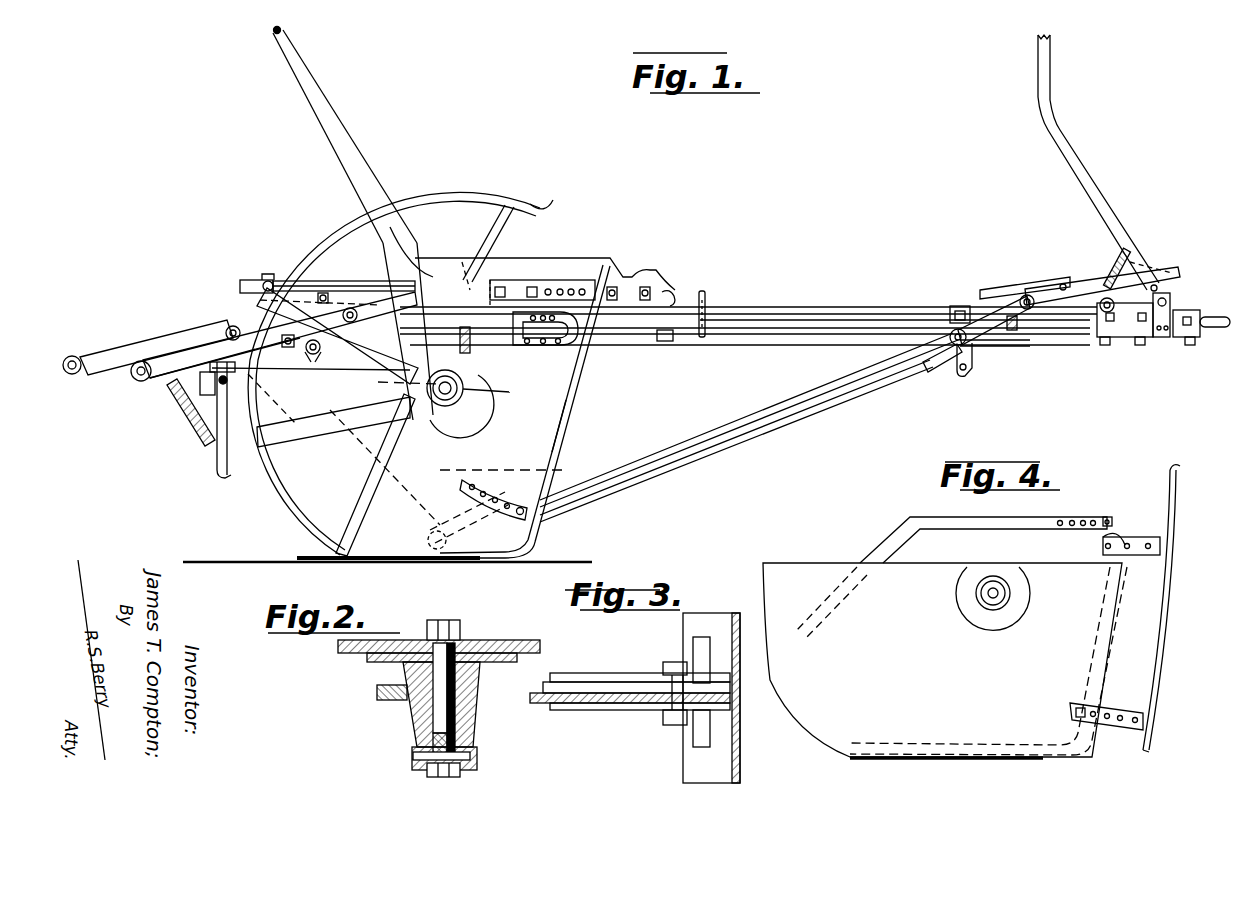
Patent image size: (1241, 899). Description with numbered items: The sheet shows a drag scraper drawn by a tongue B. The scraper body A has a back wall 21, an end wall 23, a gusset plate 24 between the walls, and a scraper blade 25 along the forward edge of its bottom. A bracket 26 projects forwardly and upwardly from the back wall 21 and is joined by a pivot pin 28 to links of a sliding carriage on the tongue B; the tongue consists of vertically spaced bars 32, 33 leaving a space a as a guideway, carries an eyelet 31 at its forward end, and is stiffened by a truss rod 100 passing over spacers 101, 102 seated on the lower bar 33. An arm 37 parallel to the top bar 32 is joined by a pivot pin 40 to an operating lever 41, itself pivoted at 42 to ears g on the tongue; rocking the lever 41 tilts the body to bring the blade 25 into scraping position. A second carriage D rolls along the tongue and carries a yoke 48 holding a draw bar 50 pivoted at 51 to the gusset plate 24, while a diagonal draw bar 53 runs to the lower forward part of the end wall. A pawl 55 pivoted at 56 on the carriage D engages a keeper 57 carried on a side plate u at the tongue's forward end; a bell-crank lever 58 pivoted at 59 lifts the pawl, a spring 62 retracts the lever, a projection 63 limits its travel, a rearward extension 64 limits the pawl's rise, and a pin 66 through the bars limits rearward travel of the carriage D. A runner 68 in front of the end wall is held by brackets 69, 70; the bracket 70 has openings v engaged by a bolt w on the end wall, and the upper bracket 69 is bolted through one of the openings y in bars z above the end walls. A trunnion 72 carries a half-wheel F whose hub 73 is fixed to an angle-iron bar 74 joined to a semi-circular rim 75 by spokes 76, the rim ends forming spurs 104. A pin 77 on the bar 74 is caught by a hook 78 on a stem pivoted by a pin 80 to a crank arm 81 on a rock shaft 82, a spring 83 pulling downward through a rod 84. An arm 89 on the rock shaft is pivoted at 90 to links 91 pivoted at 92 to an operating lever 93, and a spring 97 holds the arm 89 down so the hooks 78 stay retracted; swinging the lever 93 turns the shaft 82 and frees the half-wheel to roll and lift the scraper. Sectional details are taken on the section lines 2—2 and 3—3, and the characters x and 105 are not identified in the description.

In FIG. 1, the section line 2— 2 is at (386, 370).
In FIG. 1, the section line 3— 3 is at (455, 460).
In FIG. 1, the back wall 21 is at (215, 485).
In FIG. 1, the end wall 23 is at (537, 420).
In FIG. 2, the end wall 23 is at (527, 640).
In FIG. 3, the end wall 23 is at (594, 704).
In FIG. 1, the gusset plate 24 is at (311, 396).
In FIG. 1, the scraper blade 25 is at (478, 560).
In FIG. 1, the bracket 26 is at (215, 345).
In FIG. 1, the pivot pin 28 is at (350, 308).
In FIG. 1, the eyelet 31 is at (1222, 330).
In FIG. 1, the top bar of tongue 32 is at (760, 307).
In FIG. 1, the lower bar of tongue 33 is at (763, 340).
In FIG. 1, the arm 37 is at (560, 280).
In FIG. 1, the pivot pin 40 is at (615, 285).
In FIG. 1, the operating lever 41 is at (373, 165).
In FIG. 1, the pivot of operating lever 42 is at (650, 285).
In FIG. 1, the yoke 48 is at (978, 357).
In FIG. 1, the draw bar 50 is at (808, 427).
In FIG. 1, the pivot of draw bar 51 is at (430, 535).
In FIG. 1, the draw bar 53 is at (748, 417).
In FIG. 1, the pawl 55 is at (1080, 283).
In FIG. 1, the pawl pivot 56 is at (1028, 295).
In FIG. 1, the keeper 57 is at (1106, 298).
In FIG. 1, the bell-crank lever 58 is at (1057, 135).
In FIG. 1, the pivot of bell-crank lever 59 is at (1170, 298).
In FIG. 1, the spring 62 is at (1120, 258).
In FIG. 1, the projection 63 is at (1195, 305).
In FIG. 1, the rearward extension 64 is at (992, 288).
In FIG. 1, the pin 66 is at (707, 292).
In FIG. 1, the runner 68 is at (577, 400).
In FIG. 3, the runner 68 is at (690, 630).
In FIG. 4, the runner 68 is at (1178, 488).
In FIG. 1, the upper bracket 69 is at (556, 349).
In FIG. 4, the upper bracket 69 is at (1142, 536).
In FIG. 1, the bracket 70 is at (498, 501).
In FIG. 3, the bracket 70 is at (634, 712).
In FIG. 4, the bracket 70 is at (1118, 706).
In FIG. 1, the trunnion 72 is at (465, 398).
In FIG. 2, the trunnion 72 is at (465, 705).
In FIG. 4, the trunnion 72 is at (978, 593).
In FIG. 2, the hub 73 is at (470, 730).
In FIG. 1, the angle-iron bar 74 is at (355, 495).
In FIG. 2, the angle-iron bar 74 is at (395, 697).
In FIG. 1, the semi-circular rim 75 is at (283, 514).
In FIG. 1, the spokes 76 is at (315, 445).
In FIG. 1, the pin 77 is at (461, 252).
In FIG. 1, the hook 78 is at (492, 262).
In FIG. 1, the pin 80 is at (250, 280).
In FIG. 1, the crank arm 81 is at (268, 278).
In FIG. 1, the rock shaft 82 is at (315, 355).
In FIG. 1, the spring 83 is at (472, 343).
In FIG. 1, the rod 84 is at (328, 294).
In FIG. 1, the arm 89 is at (203, 381).
In FIG. 1, the pivot 90 is at (133, 377).
In FIG. 1, the links 91 is at (173, 352).
In FIG. 1, the pivot 92 is at (233, 326).
In FIG. 1, the operating lever 93 is at (100, 356).
In FIG. 1, the spring 97 is at (185, 415).
In FIG. 1, the truss rod 100 is at (828, 346).
In FIG. 1, the spacer 101 is at (666, 342).
In FIG. 1, the spacer 102 is at (1015, 348).
In FIG. 1, the spurs 104 is at (550, 206).
In FIG. 1, the shoe 105 is at (410, 562).
In FIG. 4, the shoe 105 is at (922, 760).
In FIG. 1, the scraper body A is at (236, 514).
In FIG. 4, the scraper body A is at (820, 561).
In FIG. 1, the tongue B is at (815, 303).
In FIG. 1, the carriage D is at (960, 303).
In FIG. 1, the half-wheel F is at (336, 222).
In FIG. 1, the space a is at (857, 318).
In FIG. 1, the ears g is at (672, 293).
In FIG. 1, the side plate u is at (1128, 337).
In FIG. 1, the bars z is at (337, 336).
In FIG. 4, the bars z is at (988, 517).
In FIG. 4, the bolt x is at (1108, 516).
In FIG. 4, the openings y is at (1080, 520).
In FIG. 3, the bolt w is at (670, 726).
In FIG. 4, the bolt w is at (1075, 712).
In FIG. 4, the openings v is at (1110, 724).